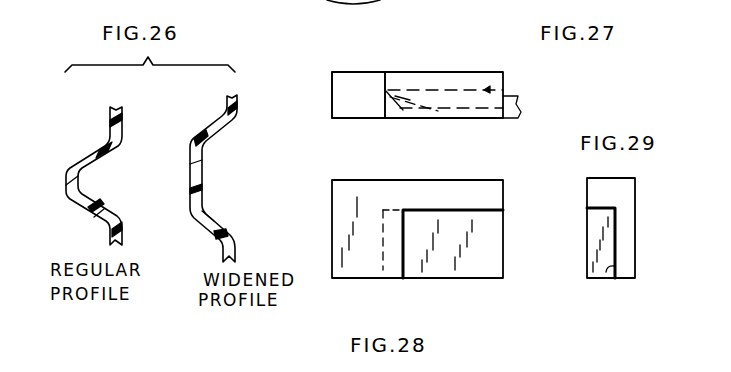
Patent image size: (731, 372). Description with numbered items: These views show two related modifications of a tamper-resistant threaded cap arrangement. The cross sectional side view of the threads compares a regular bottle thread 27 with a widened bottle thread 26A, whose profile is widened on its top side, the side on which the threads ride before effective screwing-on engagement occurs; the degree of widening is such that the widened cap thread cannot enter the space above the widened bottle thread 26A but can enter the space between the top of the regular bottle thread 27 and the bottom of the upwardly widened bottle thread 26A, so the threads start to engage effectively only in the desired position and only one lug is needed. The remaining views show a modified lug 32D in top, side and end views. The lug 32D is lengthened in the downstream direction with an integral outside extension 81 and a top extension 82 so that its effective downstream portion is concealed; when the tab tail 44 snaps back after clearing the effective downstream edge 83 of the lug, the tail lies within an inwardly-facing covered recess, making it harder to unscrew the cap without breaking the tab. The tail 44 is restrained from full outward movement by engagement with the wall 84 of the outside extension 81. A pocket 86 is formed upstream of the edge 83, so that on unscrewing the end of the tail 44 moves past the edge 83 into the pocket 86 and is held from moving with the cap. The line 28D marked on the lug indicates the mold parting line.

In FIG. 26, the regular bottle thread 27 is at (66, 163).
In FIG. 26, the widened bottle thread 26A is at (190, 177).
In FIG. 27, the lug 32D is at (342, 83).
In FIG. 28, the lug 32D is at (332, 200).
In FIG. 27, the mold parting line 28D is at (384, 80).
In FIG. 27, the pocket 86 is at (407, 90).
In FIG. 27, the tab tail 44 is at (446, 100).
In FIG. 27, the wall of the outside extension 84 is at (488, 88).
In FIG. 29, the wall of the outside extension 84 is at (606, 274).
In FIG. 27, the outside extension 81 is at (505, 82).
In FIG. 28, the outside extension 81 is at (503, 232).
In FIG. 29, the outside extension 81 is at (625, 234).
In FIG. 28, the top extension 82 is at (494, 197).
In FIG. 29, the top extension 82 is at (622, 188).
In FIG. 27, the effective downstream edge 83 is at (403, 112).
In FIG. 28, the effective downstream edge 83 is at (405, 260).
In FIG. 29, the effective downstream edge 83 is at (587, 255).